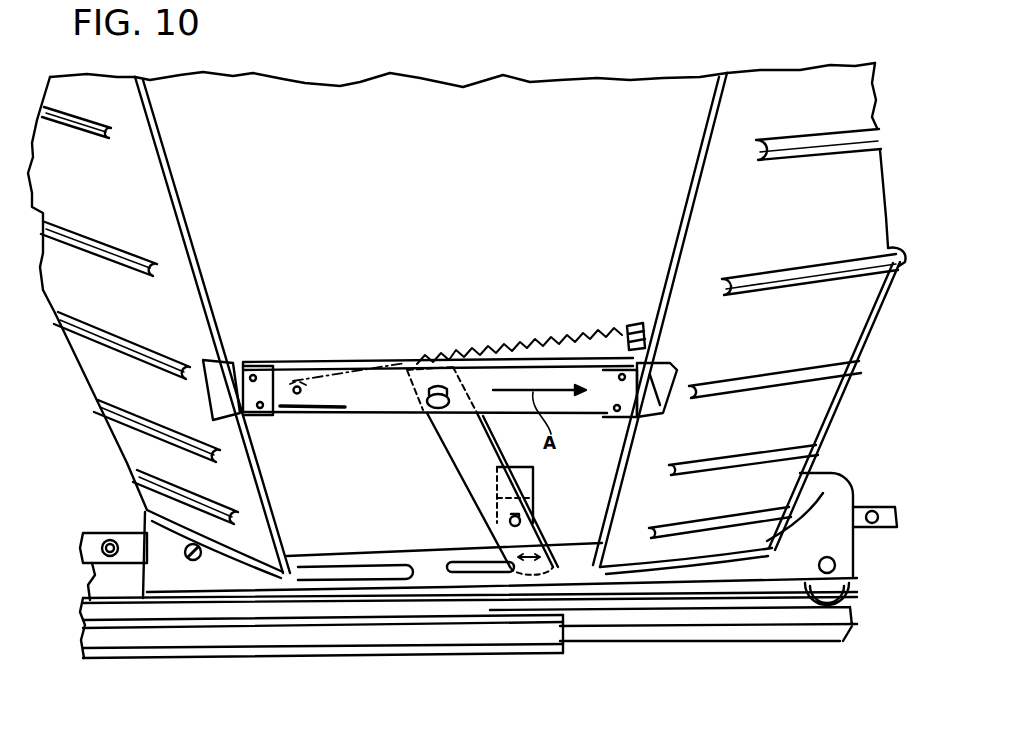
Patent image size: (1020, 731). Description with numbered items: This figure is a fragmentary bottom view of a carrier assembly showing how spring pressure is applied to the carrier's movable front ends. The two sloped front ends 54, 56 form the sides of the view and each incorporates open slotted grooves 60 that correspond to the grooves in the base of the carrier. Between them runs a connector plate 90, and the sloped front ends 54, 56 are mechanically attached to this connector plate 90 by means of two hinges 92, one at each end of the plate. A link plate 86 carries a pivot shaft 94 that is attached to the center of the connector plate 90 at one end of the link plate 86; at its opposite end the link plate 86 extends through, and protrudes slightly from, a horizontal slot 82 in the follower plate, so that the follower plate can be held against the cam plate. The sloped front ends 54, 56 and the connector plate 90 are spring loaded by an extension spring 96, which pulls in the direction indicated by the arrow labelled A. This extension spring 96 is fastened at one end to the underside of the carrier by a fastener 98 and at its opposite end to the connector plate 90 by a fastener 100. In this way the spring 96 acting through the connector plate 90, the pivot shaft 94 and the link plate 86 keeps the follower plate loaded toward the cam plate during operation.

The sloped front end 54 is at (850, 323).
The sloped front end 56 is at (128, 368).
The open slotted grooves 60 is at (133, 348).
The horizontal slot 82 is at (455, 562).
The link plate 86 is at (463, 443).
The connector plate 90 is at (284, 390).
The hinges 92 is at (263, 395).
The pivot shaft 94 is at (420, 378).
The extension spring 96 is at (502, 350).
The fastener 98 is at (630, 327).
The fastener 100 is at (299, 382).